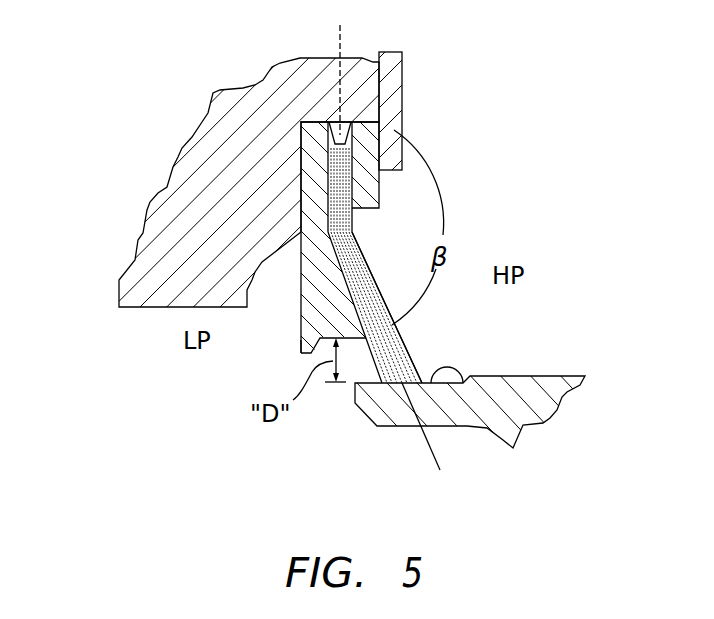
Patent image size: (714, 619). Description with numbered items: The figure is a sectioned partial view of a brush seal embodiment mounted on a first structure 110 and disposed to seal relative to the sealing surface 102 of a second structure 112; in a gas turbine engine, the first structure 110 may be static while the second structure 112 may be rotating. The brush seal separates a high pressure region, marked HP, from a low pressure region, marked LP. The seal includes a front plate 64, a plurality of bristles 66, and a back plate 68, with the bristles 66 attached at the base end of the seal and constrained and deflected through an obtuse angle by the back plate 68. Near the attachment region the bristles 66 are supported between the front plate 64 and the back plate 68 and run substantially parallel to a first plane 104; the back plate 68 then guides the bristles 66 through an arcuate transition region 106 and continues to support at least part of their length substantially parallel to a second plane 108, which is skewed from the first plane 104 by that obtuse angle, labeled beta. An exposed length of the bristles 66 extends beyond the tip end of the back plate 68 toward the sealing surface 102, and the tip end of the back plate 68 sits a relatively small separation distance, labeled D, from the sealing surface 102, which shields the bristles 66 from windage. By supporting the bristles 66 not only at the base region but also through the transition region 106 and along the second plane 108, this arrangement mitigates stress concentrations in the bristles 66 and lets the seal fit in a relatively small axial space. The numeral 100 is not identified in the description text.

The front plate 64 is at (328, 183).
The bristles 66 is at (405, 344).
The back plate 68 is at (288, 323).
The flange body 100 is at (301, 135).
The sealing surface 102 is at (463, 383).
The first plane 104 is at (338, 46).
The transition region 106 is at (354, 240).
The second plane 108 is at (434, 455).
The first structure 110 is at (163, 262).
The second structure 112 is at (555, 424).